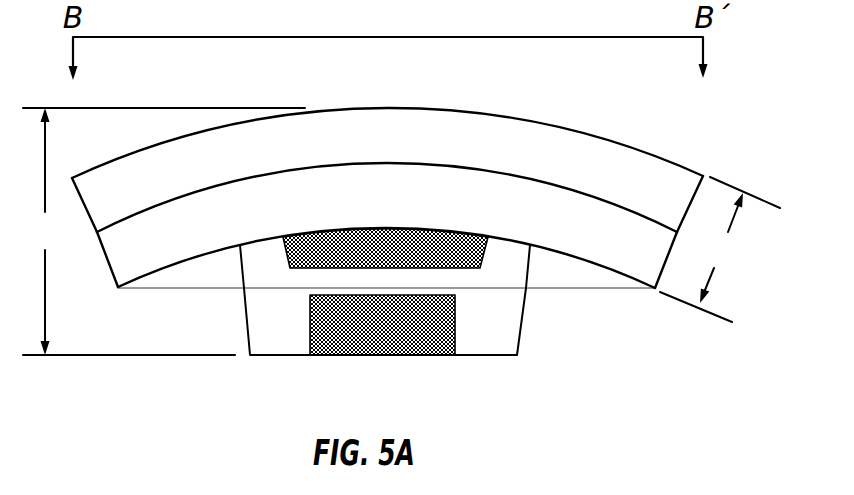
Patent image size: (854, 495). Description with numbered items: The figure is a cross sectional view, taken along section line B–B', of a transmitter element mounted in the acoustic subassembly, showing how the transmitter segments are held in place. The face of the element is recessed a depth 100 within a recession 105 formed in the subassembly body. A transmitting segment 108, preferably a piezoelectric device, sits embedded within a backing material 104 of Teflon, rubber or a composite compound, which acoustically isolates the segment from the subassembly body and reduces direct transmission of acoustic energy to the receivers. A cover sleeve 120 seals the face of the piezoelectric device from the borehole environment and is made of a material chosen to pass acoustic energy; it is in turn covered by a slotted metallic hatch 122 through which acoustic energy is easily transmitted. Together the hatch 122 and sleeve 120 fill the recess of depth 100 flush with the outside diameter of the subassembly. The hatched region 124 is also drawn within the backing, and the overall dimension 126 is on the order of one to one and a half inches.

The slotted metallic hatch 122 is at (355, 156).
The cover sleeve 120 is at (355, 211).
The transmitting segment 108 is at (483, 248).
The recession 105 is at (240, 291).
The backing material 104 is at (463, 328).
The electrode / conductor region 124 is at (348, 343).
The dimension 126 is at (163, 231).
The depth 100 is at (720, 249).